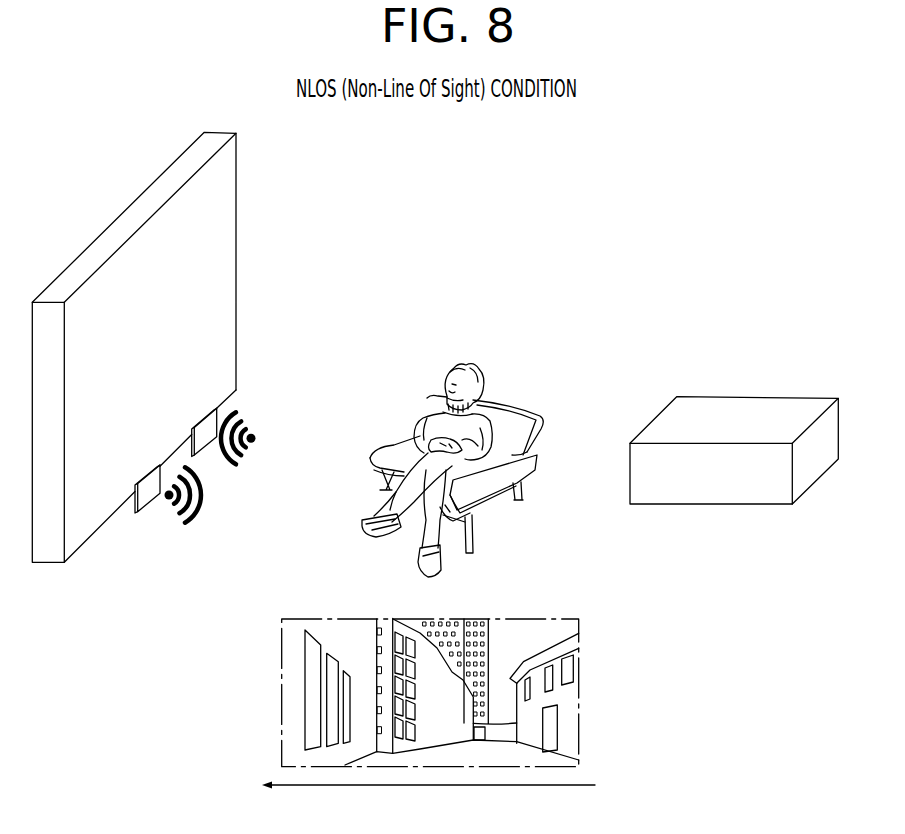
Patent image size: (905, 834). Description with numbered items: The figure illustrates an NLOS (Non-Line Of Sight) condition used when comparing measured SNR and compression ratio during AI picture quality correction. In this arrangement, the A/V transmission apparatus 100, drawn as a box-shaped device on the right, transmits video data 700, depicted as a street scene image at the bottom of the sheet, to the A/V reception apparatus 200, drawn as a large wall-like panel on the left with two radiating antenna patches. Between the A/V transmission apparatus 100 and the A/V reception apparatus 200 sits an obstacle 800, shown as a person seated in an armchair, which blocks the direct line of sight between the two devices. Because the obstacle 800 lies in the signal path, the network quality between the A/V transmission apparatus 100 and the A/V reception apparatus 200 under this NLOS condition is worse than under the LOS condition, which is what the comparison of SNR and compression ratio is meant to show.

The A/V reception apparatus 200 is at (109, 238).
The obstacle 800 is at (468, 363).
The A/V transmission apparatus 100 is at (737, 407).
The video data 700 is at (580, 687).